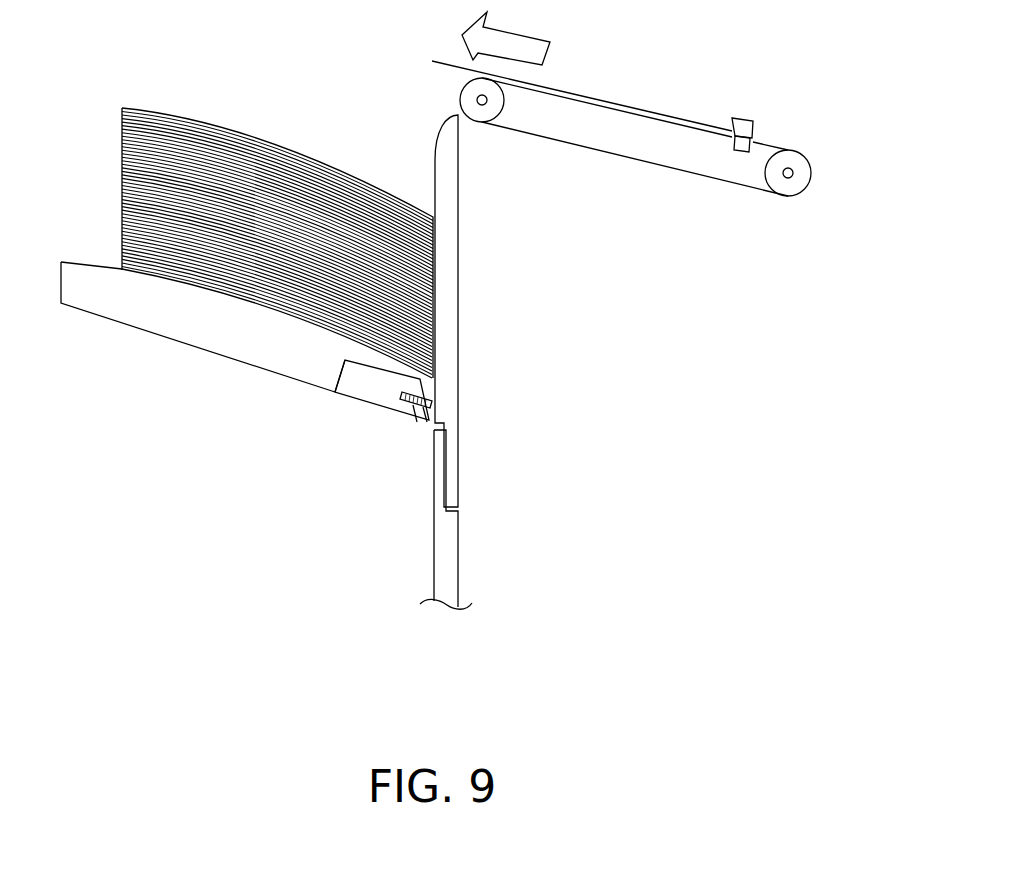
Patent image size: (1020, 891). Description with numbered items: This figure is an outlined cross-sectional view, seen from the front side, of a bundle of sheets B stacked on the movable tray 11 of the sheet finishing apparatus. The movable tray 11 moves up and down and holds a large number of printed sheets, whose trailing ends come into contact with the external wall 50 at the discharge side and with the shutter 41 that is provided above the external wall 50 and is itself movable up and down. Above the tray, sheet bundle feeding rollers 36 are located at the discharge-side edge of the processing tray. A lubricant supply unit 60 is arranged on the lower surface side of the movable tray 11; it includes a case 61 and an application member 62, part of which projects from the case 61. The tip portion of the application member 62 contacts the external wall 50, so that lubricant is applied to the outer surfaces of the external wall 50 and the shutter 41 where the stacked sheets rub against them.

The bundle of sheets B is at (226, 130).
The movable tray 11 is at (190, 348).
The sheet bundle feeding roller 36 is at (505, 104).
The shutter 41 is at (459, 370).
The external wall 50 is at (458, 540).
The lubricant supply unit 60 is at (370, 406).
The case 61 is at (333, 373).
The application member 62 is at (418, 420).